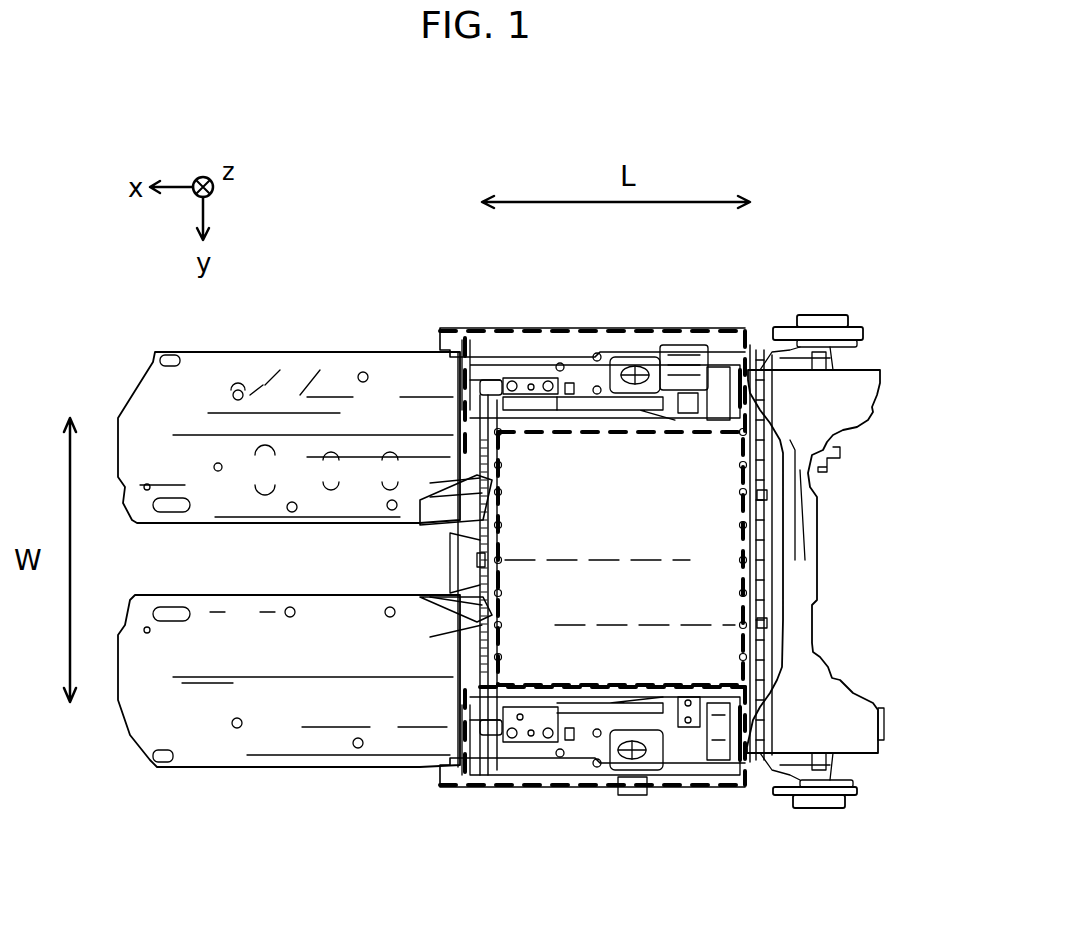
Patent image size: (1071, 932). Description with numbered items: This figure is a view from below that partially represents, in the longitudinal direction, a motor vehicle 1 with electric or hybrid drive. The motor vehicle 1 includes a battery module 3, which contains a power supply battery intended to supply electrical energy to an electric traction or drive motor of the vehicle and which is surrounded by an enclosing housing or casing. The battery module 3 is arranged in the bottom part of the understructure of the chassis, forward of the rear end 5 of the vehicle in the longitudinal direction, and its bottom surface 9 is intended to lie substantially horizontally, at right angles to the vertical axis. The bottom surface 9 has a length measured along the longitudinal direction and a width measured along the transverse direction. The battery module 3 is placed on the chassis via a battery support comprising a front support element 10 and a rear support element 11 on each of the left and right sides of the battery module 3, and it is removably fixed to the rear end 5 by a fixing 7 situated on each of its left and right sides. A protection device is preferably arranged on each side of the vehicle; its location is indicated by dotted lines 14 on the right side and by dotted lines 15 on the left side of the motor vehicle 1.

The motor vehicle 1 is at (838, 130).
The battery module 3 is at (732, 592).
The rear end 5 is at (829, 292).
The fixing 7 is at (598, 328).
The bottom surface 9 is at (700, 648).
The front support element 10 is at (525, 383).
The rear support element 11 is at (671, 328).
The dotted lines 14 is at (440, 782).
The dotted lines 15 is at (462, 383).